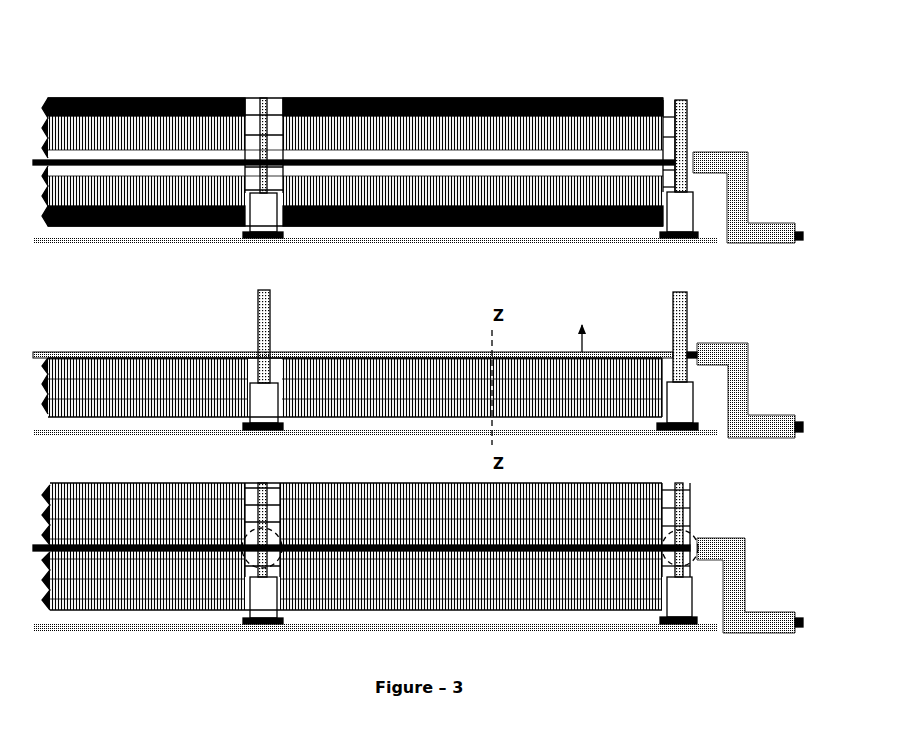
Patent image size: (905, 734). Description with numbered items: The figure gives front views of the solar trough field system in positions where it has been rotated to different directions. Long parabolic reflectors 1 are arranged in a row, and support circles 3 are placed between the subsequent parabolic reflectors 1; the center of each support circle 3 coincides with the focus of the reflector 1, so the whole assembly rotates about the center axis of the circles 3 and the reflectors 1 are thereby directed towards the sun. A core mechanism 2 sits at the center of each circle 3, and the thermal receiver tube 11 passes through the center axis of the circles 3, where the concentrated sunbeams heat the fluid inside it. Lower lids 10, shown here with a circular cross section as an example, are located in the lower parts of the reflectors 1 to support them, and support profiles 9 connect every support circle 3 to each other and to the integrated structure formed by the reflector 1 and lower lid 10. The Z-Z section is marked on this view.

The parabolic reflector 1 is at (207, 100).
The core mechanism 2 is at (255, 537).
The support circle 3 is at (272, 105).
The support profile 9 is at (627, 377).
The lower lid 10 is at (390, 392).
The thermal receiver tube 11 is at (350, 352).